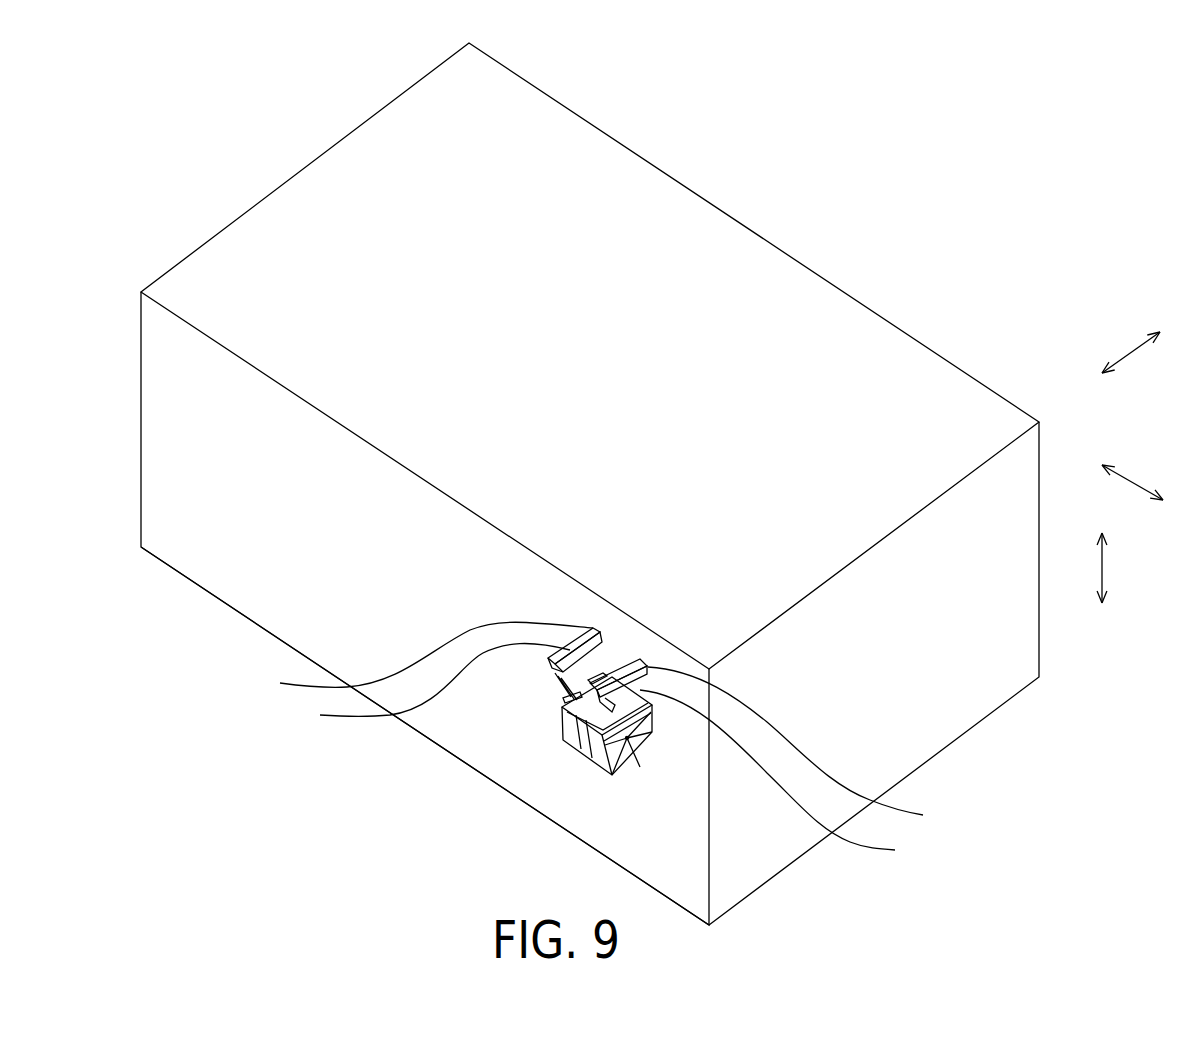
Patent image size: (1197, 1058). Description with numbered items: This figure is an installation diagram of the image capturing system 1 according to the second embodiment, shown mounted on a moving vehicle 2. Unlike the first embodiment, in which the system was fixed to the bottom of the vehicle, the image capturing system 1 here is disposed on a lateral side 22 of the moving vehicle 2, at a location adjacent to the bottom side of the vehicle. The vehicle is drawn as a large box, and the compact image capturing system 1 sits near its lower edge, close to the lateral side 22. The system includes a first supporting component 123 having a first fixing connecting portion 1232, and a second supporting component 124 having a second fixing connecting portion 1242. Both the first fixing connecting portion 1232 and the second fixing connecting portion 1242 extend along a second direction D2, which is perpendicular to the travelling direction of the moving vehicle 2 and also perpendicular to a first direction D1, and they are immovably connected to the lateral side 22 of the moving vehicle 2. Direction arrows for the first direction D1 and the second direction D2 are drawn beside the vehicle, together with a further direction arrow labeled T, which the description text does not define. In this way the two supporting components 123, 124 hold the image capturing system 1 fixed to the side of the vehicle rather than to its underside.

The moving vehicle 2 is at (793, 208).
The lateral side 22 is at (457, 725).
The image capturing system 1 is at (548, 748).
The first supporting component 123 is at (430, 678).
The first fixing connecting portion 1232 is at (407, 665).
The second supporting component 124 is at (790, 768).
The second fixing connecting portion 1242 is at (787, 747).
The first direction D1 is at (1125, 568).
The second direction D2 is at (1125, 344).
The thickness direction T is at (1132, 472).